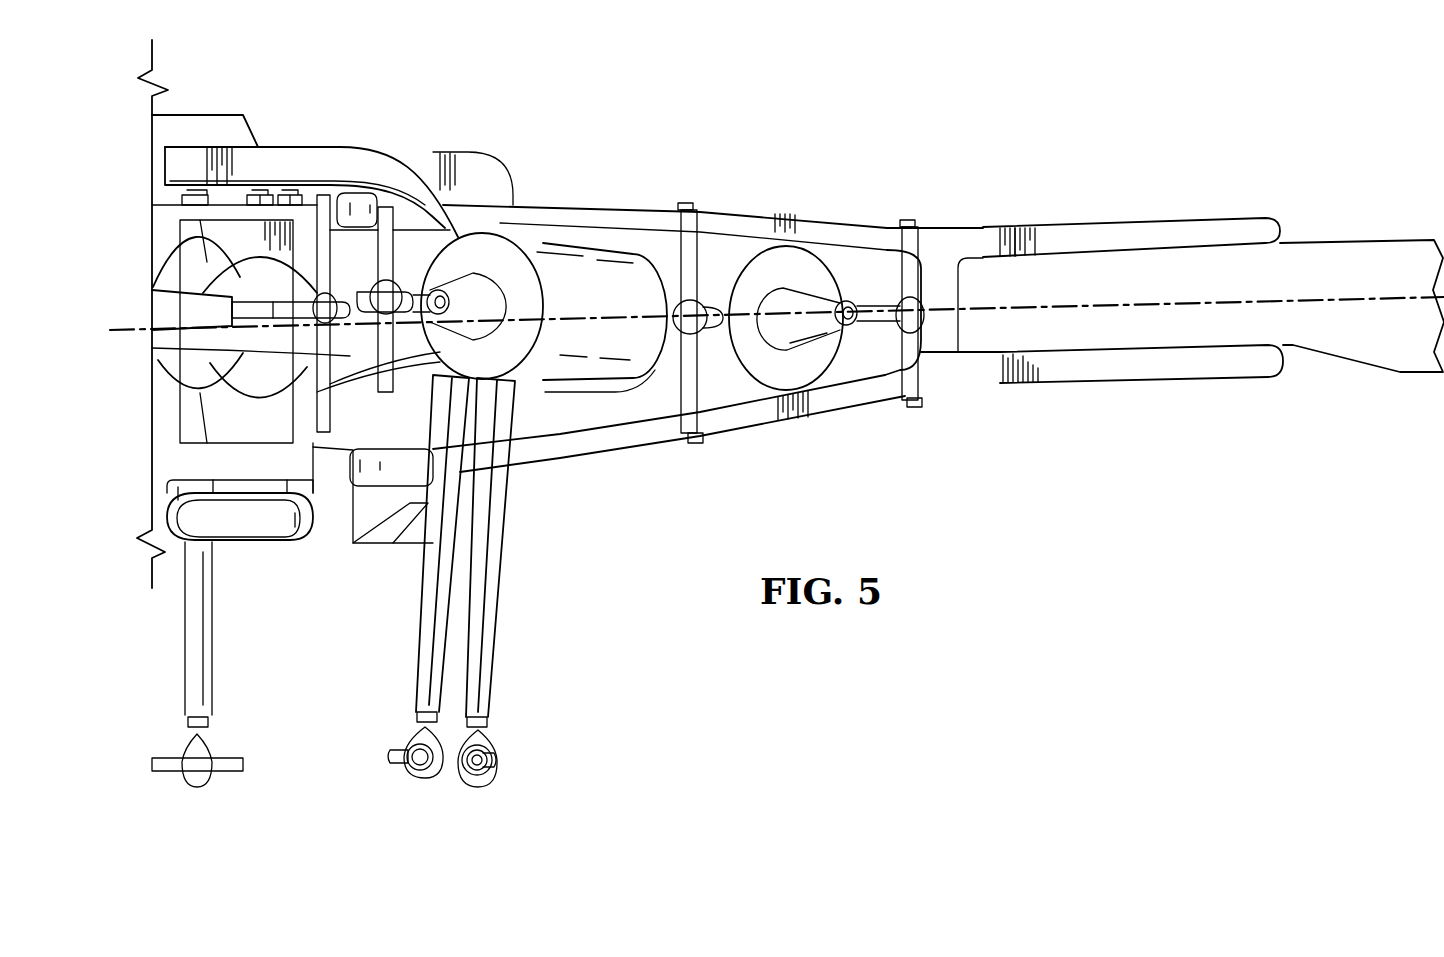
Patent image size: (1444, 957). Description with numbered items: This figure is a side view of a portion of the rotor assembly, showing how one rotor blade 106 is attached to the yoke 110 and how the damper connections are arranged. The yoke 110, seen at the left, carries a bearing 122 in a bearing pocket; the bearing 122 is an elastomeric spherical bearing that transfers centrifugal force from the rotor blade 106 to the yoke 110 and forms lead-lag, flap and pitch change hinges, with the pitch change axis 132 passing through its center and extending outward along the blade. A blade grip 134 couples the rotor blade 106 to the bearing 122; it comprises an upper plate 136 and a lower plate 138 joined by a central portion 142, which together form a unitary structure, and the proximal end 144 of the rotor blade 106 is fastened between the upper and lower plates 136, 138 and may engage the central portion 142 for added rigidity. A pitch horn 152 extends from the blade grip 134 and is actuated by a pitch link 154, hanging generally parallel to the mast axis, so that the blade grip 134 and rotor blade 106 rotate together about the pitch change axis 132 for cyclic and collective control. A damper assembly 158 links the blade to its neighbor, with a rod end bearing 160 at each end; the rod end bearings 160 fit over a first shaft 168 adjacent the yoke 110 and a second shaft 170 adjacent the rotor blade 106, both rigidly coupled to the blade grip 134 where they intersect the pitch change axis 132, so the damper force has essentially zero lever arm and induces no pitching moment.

The rotor blade 106 is at (1363, 238).
The yoke 110 is at (172, 407).
The bearing 122 is at (240, 277).
The pitch change axis 132 is at (1362, 303).
The blade grip 134 is at (1068, 222).
The upper plate 136 is at (1217, 217).
The lower plate 138 is at (1147, 381).
The central portion 142 is at (948, 277).
The proximal end 144 is at (1157, 263).
The pitch horn 152 is at (314, 155).
The pitch link 154 is at (500, 585).
The damper assembly 158 is at (597, 250).
The rod end bearing 160 is at (712, 340).
The first shaft 168 is at (713, 240).
The second shaft 170 is at (893, 260).